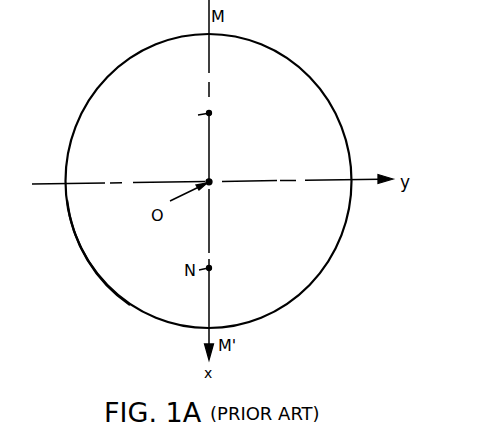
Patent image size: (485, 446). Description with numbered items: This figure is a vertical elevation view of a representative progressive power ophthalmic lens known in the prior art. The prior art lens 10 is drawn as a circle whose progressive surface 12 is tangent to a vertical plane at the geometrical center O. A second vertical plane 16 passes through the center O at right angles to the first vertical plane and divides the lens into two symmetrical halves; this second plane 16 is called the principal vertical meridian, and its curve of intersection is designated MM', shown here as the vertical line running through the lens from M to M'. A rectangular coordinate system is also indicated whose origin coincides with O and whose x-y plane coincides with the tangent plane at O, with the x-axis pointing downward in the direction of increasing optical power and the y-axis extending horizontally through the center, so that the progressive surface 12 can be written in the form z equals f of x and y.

The prior art lens 10 is at (298, 62).
The progressive surface 12 is at (100, 260).
The second vertical plane 16 is at (209, 125).